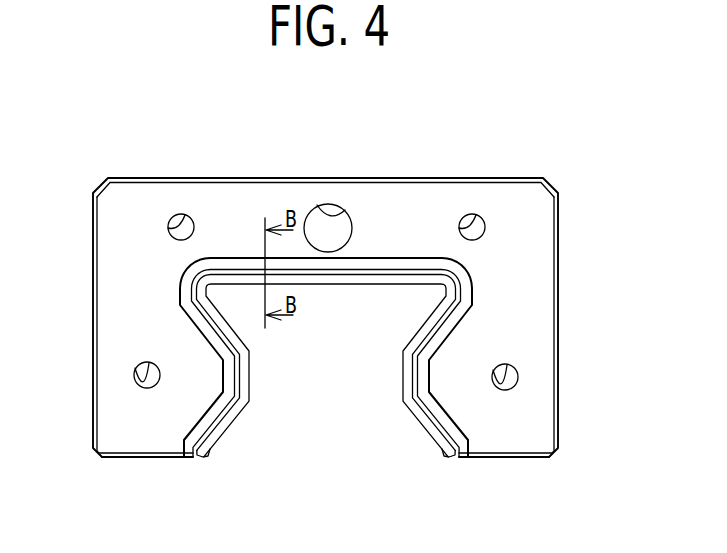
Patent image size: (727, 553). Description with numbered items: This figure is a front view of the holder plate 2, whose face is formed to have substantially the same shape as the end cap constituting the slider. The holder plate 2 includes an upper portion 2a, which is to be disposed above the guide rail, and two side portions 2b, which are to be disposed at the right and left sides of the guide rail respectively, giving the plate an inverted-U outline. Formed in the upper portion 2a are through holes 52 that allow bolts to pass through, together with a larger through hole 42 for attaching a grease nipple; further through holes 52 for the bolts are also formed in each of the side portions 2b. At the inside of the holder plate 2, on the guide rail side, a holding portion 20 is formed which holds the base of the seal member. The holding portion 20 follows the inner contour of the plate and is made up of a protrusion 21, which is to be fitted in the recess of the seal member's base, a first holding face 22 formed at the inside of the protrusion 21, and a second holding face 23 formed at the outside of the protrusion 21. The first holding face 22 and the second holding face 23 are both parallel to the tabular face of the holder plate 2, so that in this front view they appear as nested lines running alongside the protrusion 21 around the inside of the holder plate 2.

The holder plate 2 is at (523, 178).
The upper portion 2a is at (402, 218).
The side portions 2b is at (138, 327).
The holding portion 20 is at (326, 357).
The protrusion 21 is at (352, 274).
The first holding face 22 is at (393, 358).
The second holding face 23 is at (381, 262).
The through hole 42 is at (342, 206).
The through holes 52 is at (181, 214).